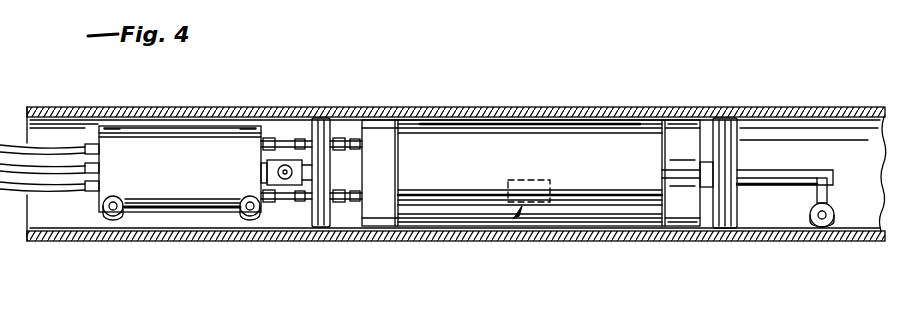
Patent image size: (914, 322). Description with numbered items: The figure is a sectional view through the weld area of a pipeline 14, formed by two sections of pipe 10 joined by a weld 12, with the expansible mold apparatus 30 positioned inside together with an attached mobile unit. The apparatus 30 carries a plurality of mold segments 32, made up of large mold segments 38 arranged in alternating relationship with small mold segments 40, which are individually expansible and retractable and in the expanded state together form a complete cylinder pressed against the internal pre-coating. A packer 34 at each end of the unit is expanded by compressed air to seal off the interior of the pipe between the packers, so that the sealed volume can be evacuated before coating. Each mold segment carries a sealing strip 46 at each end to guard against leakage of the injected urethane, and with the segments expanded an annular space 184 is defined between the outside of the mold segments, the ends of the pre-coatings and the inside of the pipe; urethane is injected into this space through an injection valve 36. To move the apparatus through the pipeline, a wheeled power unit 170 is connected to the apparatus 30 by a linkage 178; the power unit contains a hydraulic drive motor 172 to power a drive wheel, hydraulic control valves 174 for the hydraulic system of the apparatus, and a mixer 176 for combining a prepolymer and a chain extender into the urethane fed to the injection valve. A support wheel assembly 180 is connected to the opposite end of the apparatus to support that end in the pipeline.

The pipe 10 is at (273, 238).
The weld 12 is at (526, 110).
The pipeline 14 is at (838, 110).
The expansible mold apparatus 30 is at (690, 112).
The mold segments 32 is at (444, 130).
The packer 34 is at (322, 116).
The injection valve 36 is at (514, 222).
The large mold segments 38 is at (630, 155).
The small mold segments 40 is at (612, 205).
The sealing strip 46 is at (396, 124).
The wheeled power unit 170 is at (132, 122).
The hydraulic drive motor 172 is at (160, 196).
The hydraulic control valves 174 is at (207, 192).
The mixer 176 is at (232, 146).
The linkage 178 is at (289, 190).
The support wheel assembly 180 is at (803, 170).
The annular space 184 is at (556, 120).